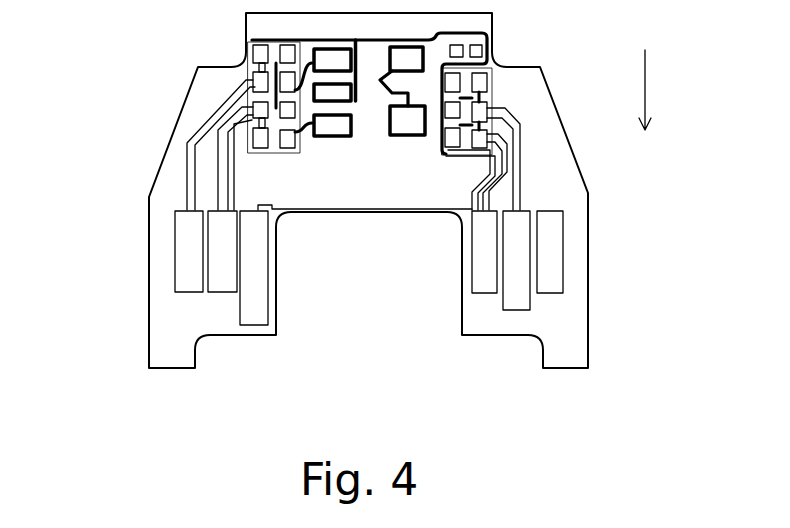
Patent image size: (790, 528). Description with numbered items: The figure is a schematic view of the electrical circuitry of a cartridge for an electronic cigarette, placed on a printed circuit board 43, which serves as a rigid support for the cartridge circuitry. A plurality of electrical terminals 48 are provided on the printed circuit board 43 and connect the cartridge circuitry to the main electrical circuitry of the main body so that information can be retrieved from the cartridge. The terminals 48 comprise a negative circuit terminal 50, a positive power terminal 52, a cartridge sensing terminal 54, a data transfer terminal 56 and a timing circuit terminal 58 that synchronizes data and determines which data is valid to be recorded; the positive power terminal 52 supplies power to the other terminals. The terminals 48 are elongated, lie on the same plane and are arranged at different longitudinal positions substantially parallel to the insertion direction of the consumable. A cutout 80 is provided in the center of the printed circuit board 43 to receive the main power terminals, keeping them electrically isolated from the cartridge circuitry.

The printed circuit board 43 is at (173, 124).
The electrical terminals 48 is at (164, 273).
The negative circuit terminal 50 is at (250, 296).
The positive power terminal 52 is at (516, 280).
The cartridge sensing terminal 54 is at (485, 268).
The data transfer terminal 56 is at (222, 272).
The timing circuit terminal 58 is at (189, 268).
The cutout 80 is at (358, 249).